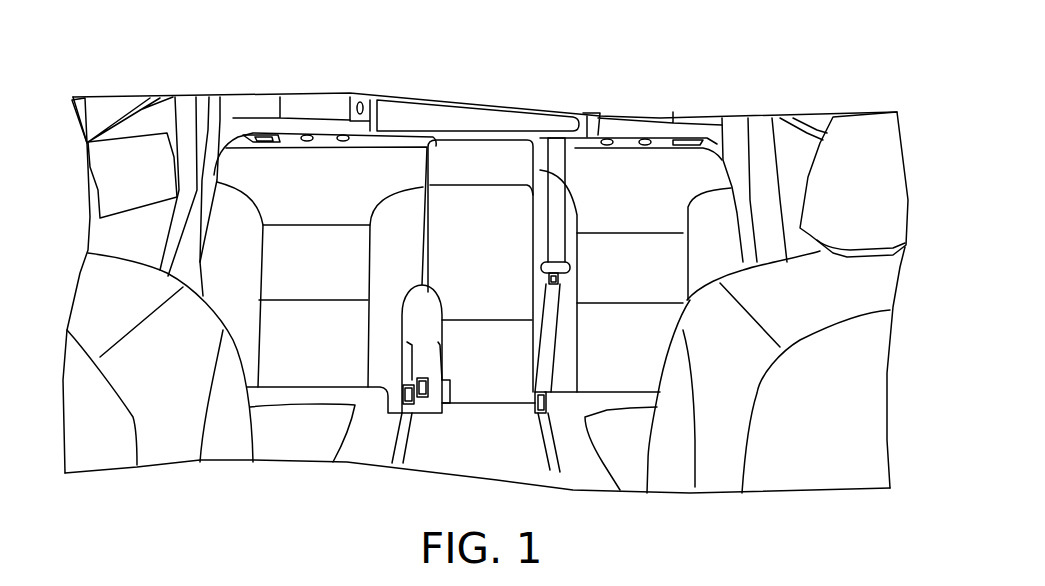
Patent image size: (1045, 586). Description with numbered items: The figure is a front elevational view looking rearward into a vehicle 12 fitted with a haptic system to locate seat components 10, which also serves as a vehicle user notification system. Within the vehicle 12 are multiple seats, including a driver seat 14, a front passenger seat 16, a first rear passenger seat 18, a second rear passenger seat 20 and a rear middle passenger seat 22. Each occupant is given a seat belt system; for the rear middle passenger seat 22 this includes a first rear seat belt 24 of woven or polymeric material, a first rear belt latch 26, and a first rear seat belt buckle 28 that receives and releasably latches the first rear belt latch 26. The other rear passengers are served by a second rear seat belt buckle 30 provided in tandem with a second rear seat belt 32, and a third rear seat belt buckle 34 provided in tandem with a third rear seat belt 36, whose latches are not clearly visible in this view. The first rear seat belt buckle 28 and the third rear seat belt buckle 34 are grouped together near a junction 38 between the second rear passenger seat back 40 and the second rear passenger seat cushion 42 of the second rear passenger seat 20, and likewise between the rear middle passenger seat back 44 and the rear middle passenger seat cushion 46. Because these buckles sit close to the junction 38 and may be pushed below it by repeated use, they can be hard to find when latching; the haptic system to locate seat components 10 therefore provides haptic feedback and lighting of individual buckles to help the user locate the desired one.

The haptic system to locate seat components 10 is at (667, 81).
The vehicle 12 is at (187, 105).
The driver seat 14 is at (873, 288).
The front passenger seat 16 is at (100, 298).
The first rear passenger seat 18 is at (717, 177).
The second rear passenger seat 20 is at (373, 170).
The rear middle passenger seat 22 is at (480, 160).
The first rear seat belt 24 is at (557, 175).
The first rear belt latch 26 is at (563, 281).
The first rear seat belt buckle 28 is at (420, 400).
The second rear seat belt buckle 30 is at (553, 467).
The second rear seat belt 32 is at (762, 156).
The third rear seat belt buckle 34 is at (402, 395).
The third rear seat belt 36 is at (213, 120).
The junction 38 is at (313, 387).
The second rear passenger seat back 40 is at (334, 197).
The second rear passenger seat cushion 42 is at (297, 438).
The rear middle passenger seat back 44 is at (495, 257).
The rear middle passenger seat cushion 46 is at (498, 460).